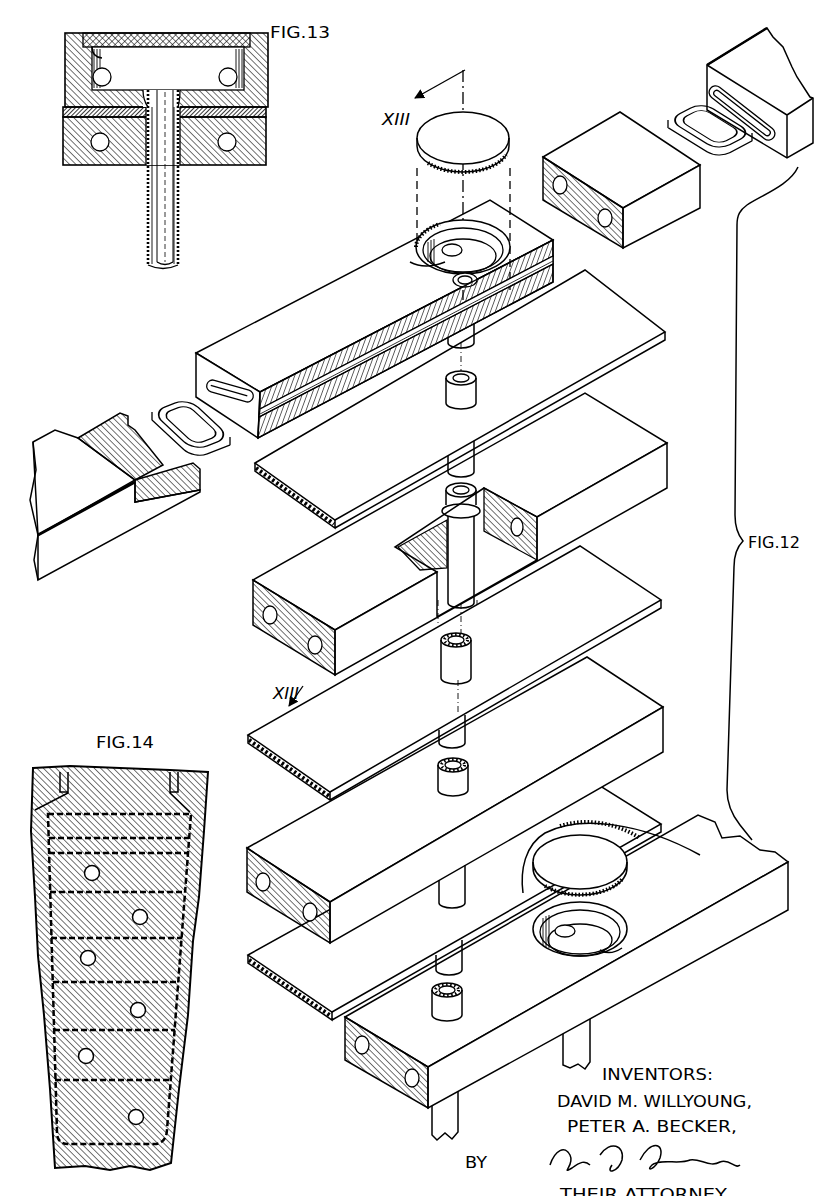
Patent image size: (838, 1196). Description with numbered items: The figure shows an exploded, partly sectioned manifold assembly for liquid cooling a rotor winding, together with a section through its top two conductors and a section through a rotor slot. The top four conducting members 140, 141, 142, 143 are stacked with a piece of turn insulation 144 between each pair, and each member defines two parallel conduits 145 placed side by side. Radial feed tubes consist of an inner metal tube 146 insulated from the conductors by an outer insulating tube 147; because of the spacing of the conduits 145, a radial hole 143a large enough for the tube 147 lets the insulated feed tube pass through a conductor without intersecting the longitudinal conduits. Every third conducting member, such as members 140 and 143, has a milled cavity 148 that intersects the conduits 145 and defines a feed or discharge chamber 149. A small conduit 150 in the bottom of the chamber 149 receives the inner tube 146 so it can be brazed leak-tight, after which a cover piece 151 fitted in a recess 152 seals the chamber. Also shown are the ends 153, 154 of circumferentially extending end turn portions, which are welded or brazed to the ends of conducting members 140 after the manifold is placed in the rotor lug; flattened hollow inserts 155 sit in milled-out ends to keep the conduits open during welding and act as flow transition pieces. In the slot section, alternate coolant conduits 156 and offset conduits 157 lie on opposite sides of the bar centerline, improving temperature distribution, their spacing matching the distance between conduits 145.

In FIG. 13, the conducting member 140 is at (268, 72).
In FIG. 12, the conducting member 140 is at (592, 140).
In FIG. 13, the conducting member 141 is at (266, 148).
In FIG. 12, the conducting member 141 is at (620, 417).
In FIG. 12, the conducting member 142 is at (617, 690).
In FIG. 12, the conducting member 143 is at (683, 833).
In FIG. 13, the radial hole 143a is at (185, 150).
In FIG. 13, the turn insulation 144 is at (268, 113).
In FIG. 12, the turn insulation 144 is at (623, 310).
In FIG. 13, the conduits 145 is at (100, 151).
In FIG. 12, the conduits 145 is at (605, 214).
In FIG. 13, the inner metal tube 146 is at (166, 245).
In FIG. 12, the inner metal tube 146 is at (476, 388).
In FIG. 13, the outer insulating tube 147 is at (179, 228).
In FIG. 12, the outer insulating tube 147 is at (474, 565).
In FIG. 13, the milled cavity 148 is at (108, 45).
In FIG. 12, the milled cavity 148 is at (473, 247).
In FIG. 13, the feed or discharge chamber 149 is at (178, 77).
In FIG. 12, the feed or discharge chamber 149 is at (484, 254).
In FIG. 13, the small conduit 150 is at (147, 92).
In FIG. 12, the small conduit 150 is at (452, 280).
In FIG. 13, the cover piece 151 is at (208, 33).
In FIG. 12, the cover piece 151 is at (478, 122).
In FIG. 13, the recess 152 is at (86, 35).
In FIG. 12, the recess 152 is at (418, 258).
In FIG. 12, the conductor end 153 is at (742, 48).
In FIG. 12, the conductor end 154 is at (97, 433).
In FIG. 12, the flattened hollow insert 155 is at (687, 108).
In FIG. 12, the coolant conduit 156 is at (143, 485).
In FIG. 14, the coolant conduit 156 is at (88, 958).
In FIG. 14, the offset conduit 157 is at (138, 1010).